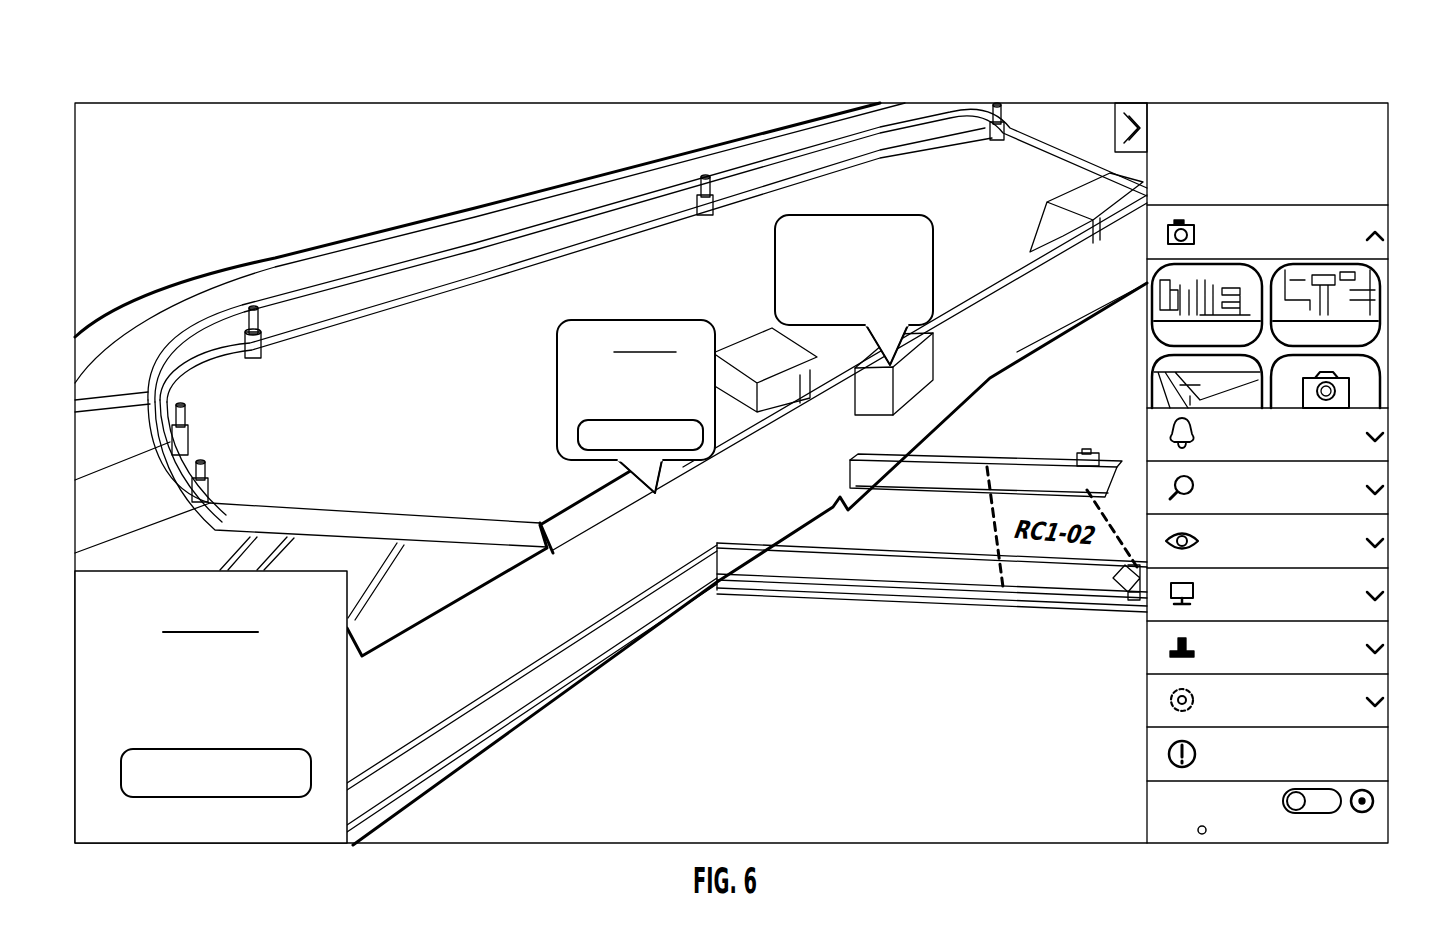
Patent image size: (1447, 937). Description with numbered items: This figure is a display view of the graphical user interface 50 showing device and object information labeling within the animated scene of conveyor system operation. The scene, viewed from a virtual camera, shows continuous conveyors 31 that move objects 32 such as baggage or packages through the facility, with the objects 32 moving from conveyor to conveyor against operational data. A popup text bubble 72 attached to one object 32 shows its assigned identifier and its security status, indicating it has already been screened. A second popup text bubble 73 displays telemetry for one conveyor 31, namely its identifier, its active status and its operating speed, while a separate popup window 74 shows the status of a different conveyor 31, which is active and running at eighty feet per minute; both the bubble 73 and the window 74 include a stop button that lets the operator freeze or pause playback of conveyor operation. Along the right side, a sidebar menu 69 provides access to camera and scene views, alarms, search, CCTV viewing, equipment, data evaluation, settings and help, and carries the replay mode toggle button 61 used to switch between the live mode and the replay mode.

The graphical user interface display 50 is at (1372, 70).
The conveyor 31 is at (655, 628).
The object 32 is at (910, 378).
The popup text bubble 72 is at (935, 240).
The popup text bubble 73 is at (557, 363).
The popup window 74 is at (237, 837).
The sidebar menu 69 is at (1385, 645).
The replay mode toggle button 61 is at (1310, 813).